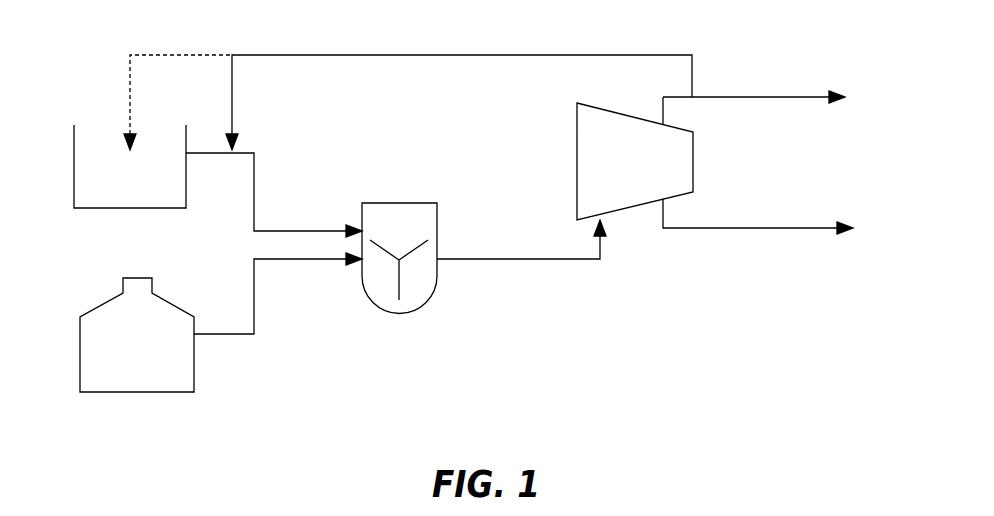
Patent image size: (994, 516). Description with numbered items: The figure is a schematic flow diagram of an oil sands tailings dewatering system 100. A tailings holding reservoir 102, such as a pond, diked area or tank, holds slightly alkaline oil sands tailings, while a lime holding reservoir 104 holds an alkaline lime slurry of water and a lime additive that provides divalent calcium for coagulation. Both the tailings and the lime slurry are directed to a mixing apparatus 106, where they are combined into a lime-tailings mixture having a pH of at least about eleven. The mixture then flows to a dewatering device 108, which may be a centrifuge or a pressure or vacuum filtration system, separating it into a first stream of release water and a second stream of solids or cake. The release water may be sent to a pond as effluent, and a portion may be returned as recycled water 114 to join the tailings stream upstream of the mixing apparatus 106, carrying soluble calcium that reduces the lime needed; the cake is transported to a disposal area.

The oil sands tailings dewatering system 100 is at (455, 128).
The tailings holding reservoir 102 is at (108, 166).
The lime holding reservoir 104 is at (140, 335).
The mixing apparatus 106 is at (399, 261).
The dewatering device 108 is at (635, 150).
The recycled water 114 is at (408, 86).